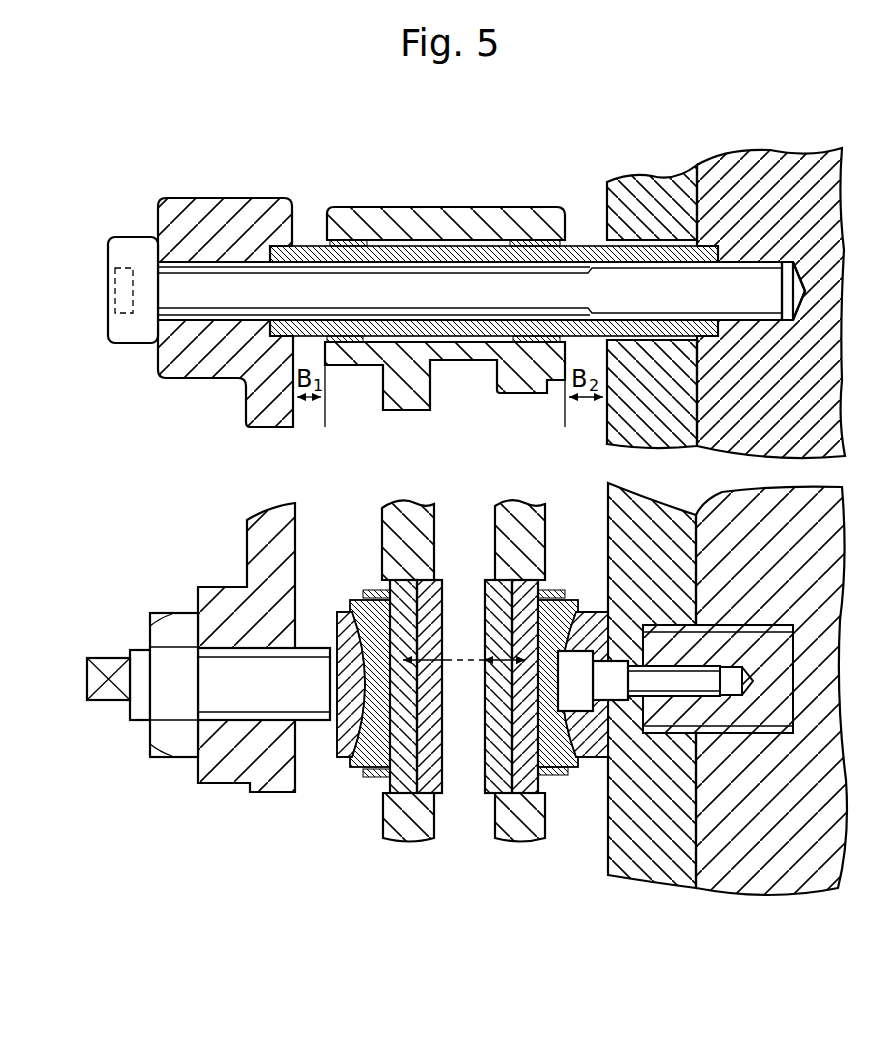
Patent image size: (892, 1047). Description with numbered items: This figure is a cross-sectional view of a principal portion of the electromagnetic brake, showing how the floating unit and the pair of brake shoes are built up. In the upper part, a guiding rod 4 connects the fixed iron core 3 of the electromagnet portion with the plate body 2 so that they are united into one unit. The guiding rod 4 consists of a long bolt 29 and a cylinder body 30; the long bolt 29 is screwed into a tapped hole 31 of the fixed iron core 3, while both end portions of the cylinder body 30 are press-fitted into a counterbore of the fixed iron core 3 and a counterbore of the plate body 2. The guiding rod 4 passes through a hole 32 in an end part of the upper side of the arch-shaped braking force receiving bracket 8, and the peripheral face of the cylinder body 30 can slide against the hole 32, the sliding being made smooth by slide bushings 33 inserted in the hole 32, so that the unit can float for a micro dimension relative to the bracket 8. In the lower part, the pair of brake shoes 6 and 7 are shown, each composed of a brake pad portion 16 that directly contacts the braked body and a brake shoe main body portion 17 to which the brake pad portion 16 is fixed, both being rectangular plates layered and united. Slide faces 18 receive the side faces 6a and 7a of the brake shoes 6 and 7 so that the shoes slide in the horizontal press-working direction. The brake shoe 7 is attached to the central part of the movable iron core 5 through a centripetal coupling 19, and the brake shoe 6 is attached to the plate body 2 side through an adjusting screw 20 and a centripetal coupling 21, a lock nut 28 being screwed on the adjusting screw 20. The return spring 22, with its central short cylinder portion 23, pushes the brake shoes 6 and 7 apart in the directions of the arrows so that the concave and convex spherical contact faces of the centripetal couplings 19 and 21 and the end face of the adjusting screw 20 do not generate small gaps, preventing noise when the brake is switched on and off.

The plate body 2 is at (258, 762).
The fixed iron core 3 is at (755, 550).
The guiding rod 4 is at (579, 238).
The movable iron core 5 is at (663, 868).
The brake shoe 6 is at (460, 952).
The side face 6a is at (395, 600).
The brake shoe 7 is at (567, 952).
The side face 7a is at (512, 585).
The braking force receiving bracket 8 is at (376, 532).
The brake pad portion 16 is at (435, 775).
The brake shoe main body portion 17 is at (410, 778).
The slide face 18 is at (492, 610).
The centripetal coupling 19 is at (600, 604).
The adjusting screw 20 is at (243, 695).
The centripetal coupling 21 is at (336, 781).
The return spring 22 is at (357, 785).
The short cylinder portion 23 is at (375, 779).
The lock nut 28 is at (170, 625).
The long bolt 29 is at (125, 318).
The cylinder body 30 is at (305, 242).
The tapped hole 31 is at (755, 303).
The hole 32 is at (438, 250).
The slide bushing 33 is at (337, 345).